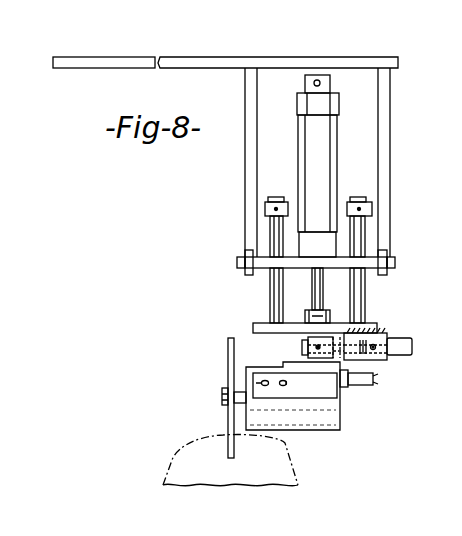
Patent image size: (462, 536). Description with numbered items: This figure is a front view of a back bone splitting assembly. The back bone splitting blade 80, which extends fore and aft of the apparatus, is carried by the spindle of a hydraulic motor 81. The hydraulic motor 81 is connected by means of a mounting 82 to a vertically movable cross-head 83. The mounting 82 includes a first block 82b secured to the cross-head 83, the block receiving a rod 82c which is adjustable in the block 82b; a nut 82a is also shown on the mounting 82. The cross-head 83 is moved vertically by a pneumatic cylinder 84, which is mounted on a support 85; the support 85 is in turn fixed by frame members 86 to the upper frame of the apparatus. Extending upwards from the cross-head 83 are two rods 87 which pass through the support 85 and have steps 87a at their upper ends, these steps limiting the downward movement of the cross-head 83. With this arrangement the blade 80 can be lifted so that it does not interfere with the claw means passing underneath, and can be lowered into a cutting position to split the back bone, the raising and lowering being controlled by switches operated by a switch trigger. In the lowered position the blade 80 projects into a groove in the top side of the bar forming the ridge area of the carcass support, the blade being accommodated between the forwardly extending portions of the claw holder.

The back bone splitting blade 80 is at (228, 341).
The hydraulic motor 81 is at (336, 410).
The mounting 82 is at (341, 344).
The clamp nut 82a is at (302, 347).
The first block 82b is at (383, 332).
The rod 82c is at (403, 341).
The cross-head 83 is at (255, 328).
The pneumatic cylinder 84 is at (308, 147).
The support 85 is at (262, 257).
The frame members 86 is at (378, 88).
The rods 87 is at (270, 283).
The steps 87a is at (267, 207).